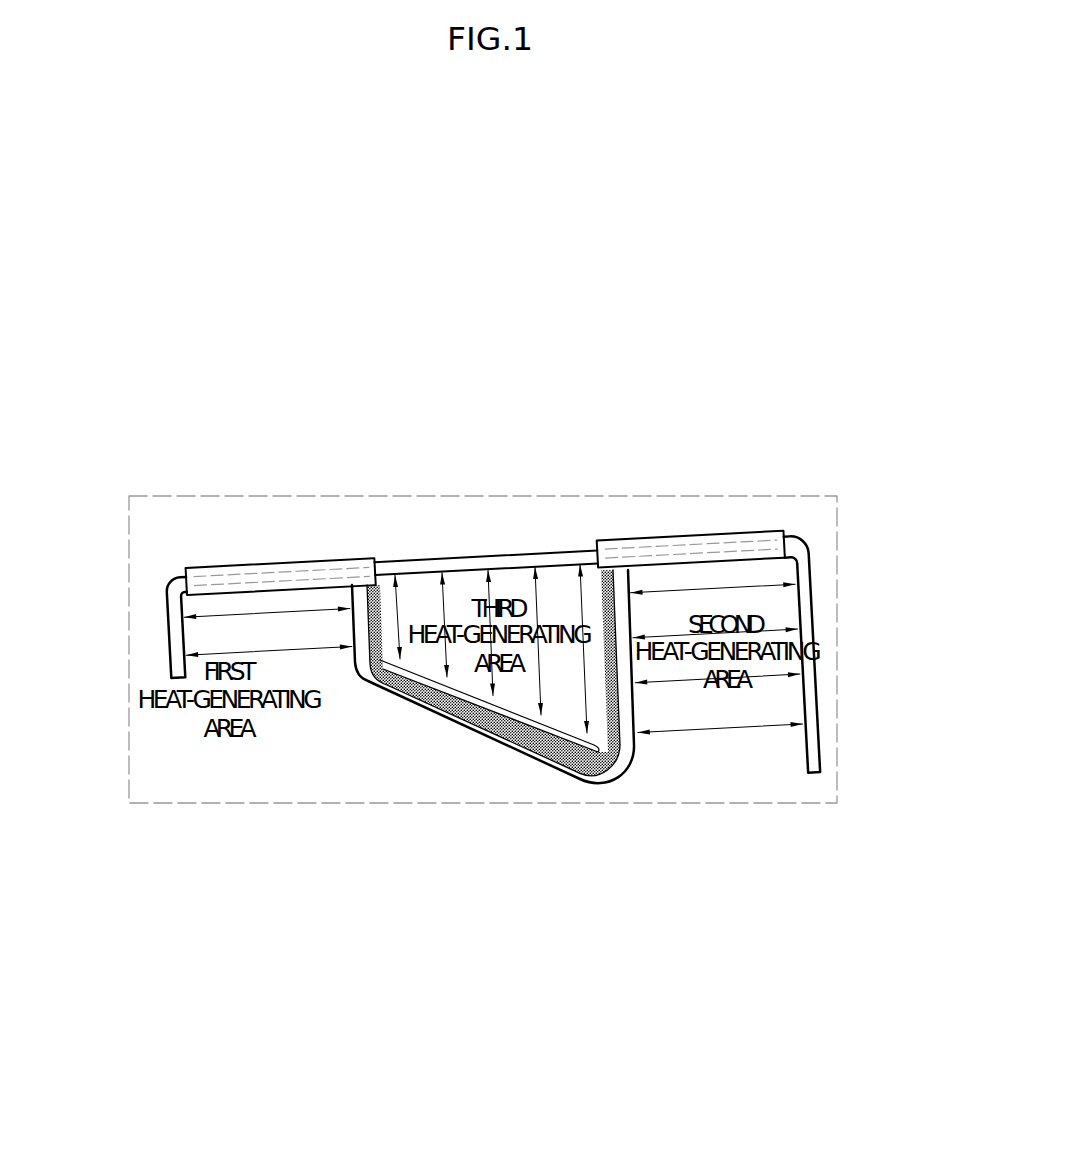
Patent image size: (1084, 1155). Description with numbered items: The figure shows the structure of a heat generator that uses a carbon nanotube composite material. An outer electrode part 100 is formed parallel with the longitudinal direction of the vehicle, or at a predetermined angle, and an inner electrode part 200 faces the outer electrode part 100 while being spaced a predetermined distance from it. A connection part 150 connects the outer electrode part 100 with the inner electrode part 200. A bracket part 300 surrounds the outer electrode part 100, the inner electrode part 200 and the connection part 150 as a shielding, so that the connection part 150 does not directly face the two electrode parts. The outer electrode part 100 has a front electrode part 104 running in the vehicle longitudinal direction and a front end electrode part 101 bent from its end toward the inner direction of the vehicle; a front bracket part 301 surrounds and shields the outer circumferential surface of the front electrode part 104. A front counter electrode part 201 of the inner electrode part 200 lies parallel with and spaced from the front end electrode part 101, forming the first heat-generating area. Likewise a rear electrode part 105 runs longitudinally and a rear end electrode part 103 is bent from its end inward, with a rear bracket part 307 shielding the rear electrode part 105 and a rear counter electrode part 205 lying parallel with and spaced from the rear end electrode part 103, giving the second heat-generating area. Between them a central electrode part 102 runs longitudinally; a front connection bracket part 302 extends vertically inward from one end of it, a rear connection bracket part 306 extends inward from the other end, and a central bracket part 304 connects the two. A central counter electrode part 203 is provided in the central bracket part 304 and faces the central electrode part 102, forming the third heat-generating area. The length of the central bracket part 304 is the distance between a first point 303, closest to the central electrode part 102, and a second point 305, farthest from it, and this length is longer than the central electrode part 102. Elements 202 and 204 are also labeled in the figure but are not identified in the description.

The outer electrode part 100 is at (127, 328).
The front end electrode part 101 is at (170, 632).
The central electrode part 102 is at (417, 563).
The rear end electrode part 103 is at (807, 580).
The front electrode part 104 is at (232, 572).
The rear electrode part 105 is at (648, 552).
The connection part 150 is at (182, 647).
The inner electrode part 200 is at (563, 910).
The front counter electrode part 201 is at (352, 660).
The inner case wall 202 is at (370, 658).
The central counter electrode part 203 is at (510, 725).
The bottom plate 204 is at (630, 723).
The rear counter electrode part 205 is at (643, 733).
The bracket part 300 is at (912, 232).
The front bracket part 301 is at (280, 562).
The front connection bracket part 302 is at (378, 582).
The first point 303 is at (606, 742).
The central bracket part 304 is at (450, 703).
The second point 305 is at (597, 567).
The rear connection bracket part 306 is at (383, 663).
The rear bracket part 307 is at (745, 530).